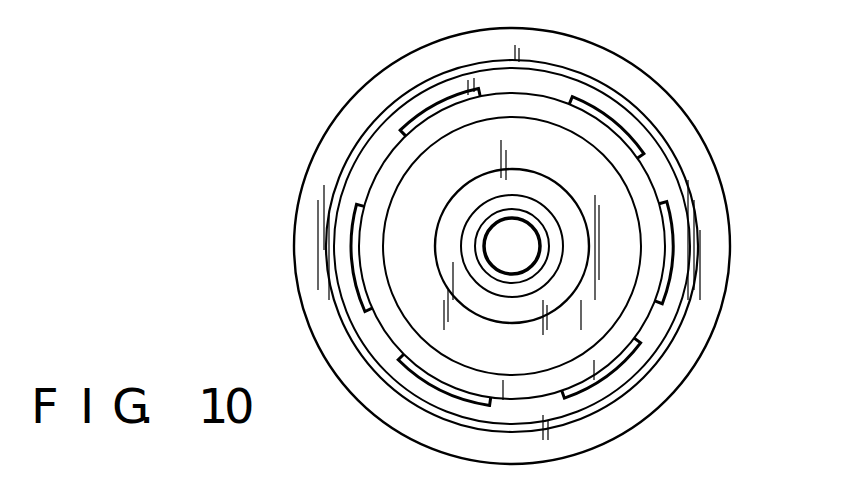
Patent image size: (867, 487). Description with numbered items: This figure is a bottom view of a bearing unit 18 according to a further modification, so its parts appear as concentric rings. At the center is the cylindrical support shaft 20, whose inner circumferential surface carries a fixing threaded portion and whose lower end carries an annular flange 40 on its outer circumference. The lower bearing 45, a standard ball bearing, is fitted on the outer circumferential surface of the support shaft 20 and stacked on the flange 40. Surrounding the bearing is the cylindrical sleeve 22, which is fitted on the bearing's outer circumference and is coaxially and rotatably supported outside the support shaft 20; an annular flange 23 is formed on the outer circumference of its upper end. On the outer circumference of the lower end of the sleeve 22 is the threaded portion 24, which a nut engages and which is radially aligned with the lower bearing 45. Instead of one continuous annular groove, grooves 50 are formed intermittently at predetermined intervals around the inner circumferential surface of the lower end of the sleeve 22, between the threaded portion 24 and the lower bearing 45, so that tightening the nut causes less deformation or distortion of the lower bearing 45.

The bearing unit 18 is at (313, 106).
The support shaft 20 is at (478, 224).
The cylindrical sleeve 22 is at (667, 177).
The annular flange 23 is at (716, 261).
The threaded portion 24 is at (657, 363).
The annular flange 40 is at (420, 317).
The lower bearing 45 is at (553, 102).
The groove 50 is at (428, 110).